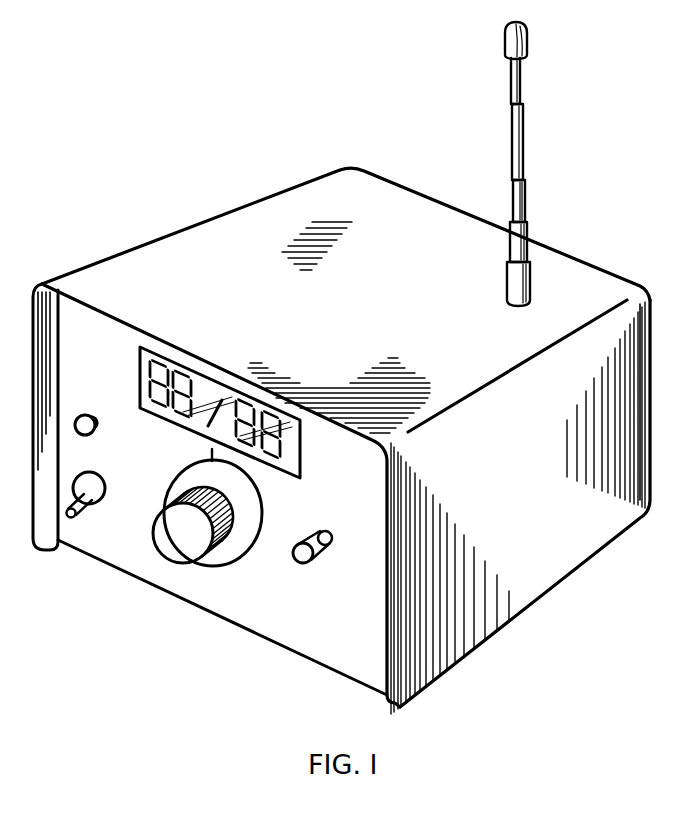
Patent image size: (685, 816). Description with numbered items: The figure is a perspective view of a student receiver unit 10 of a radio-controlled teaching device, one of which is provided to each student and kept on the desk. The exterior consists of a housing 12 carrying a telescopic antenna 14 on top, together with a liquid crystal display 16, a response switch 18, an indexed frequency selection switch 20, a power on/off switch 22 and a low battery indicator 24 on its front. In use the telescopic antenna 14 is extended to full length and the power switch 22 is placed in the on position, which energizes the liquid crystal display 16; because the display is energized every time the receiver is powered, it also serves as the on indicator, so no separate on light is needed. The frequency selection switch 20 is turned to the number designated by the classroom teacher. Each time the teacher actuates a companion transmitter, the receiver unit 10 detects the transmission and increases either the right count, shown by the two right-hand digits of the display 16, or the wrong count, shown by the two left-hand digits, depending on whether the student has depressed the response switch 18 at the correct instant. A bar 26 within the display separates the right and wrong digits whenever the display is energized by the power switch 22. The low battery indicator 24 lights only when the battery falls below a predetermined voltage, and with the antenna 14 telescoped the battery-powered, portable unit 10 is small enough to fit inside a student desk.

The student receiver unit 10 is at (158, 197).
The housing 12 is at (556, 556).
The telescopic antenna 14 is at (524, 160).
The liquid crystal display 16 is at (302, 447).
The response switch 18 is at (320, 556).
The frequency selection switch 20 is at (233, 566).
The power on/off switch 22 is at (80, 515).
The low battery indicator 24 is at (93, 432).
The bar 26 is at (208, 421).